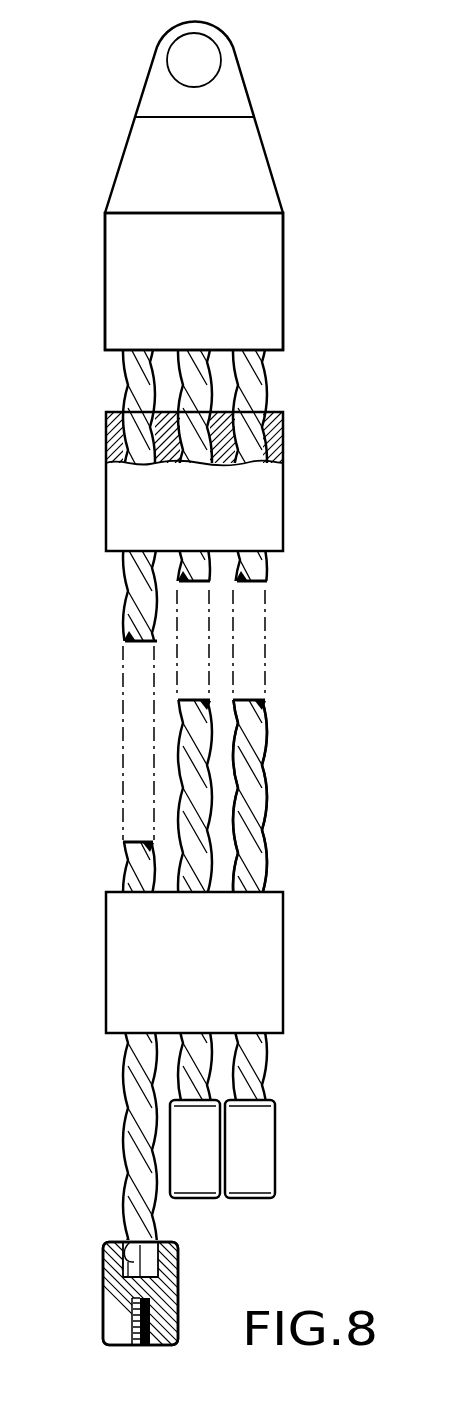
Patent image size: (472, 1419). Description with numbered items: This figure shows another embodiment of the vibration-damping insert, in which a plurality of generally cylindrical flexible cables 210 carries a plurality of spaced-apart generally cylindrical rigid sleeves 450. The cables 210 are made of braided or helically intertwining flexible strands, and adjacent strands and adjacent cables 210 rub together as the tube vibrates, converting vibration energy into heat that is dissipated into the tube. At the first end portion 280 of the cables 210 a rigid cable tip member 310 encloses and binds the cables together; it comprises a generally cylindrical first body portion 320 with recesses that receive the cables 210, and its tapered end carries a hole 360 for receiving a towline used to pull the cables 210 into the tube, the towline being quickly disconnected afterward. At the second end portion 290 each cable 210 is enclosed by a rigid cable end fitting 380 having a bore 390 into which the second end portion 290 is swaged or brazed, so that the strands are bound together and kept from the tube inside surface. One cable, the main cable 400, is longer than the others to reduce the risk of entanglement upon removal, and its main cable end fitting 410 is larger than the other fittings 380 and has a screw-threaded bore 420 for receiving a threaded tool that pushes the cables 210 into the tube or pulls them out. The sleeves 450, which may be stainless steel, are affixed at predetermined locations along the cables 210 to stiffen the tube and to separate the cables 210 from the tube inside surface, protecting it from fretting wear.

The flexible cables 210 is at (326, 377).
The first end portion 280 is at (262, 742).
The second end portion 290 is at (267, 1087).
The cable tip member 310 is at (105, 276).
The first body portion 320 is at (283, 303).
The hole 360 is at (205, 72).
The cable end fitting 380 is at (267, 1163).
The bore 390 is at (127, 1247).
The main cable 400 is at (262, 847).
The main cable end fitting 410 is at (103, 1300).
The screw-threaded bore 420 is at (137, 1345).
The sleeves 450 is at (283, 520).